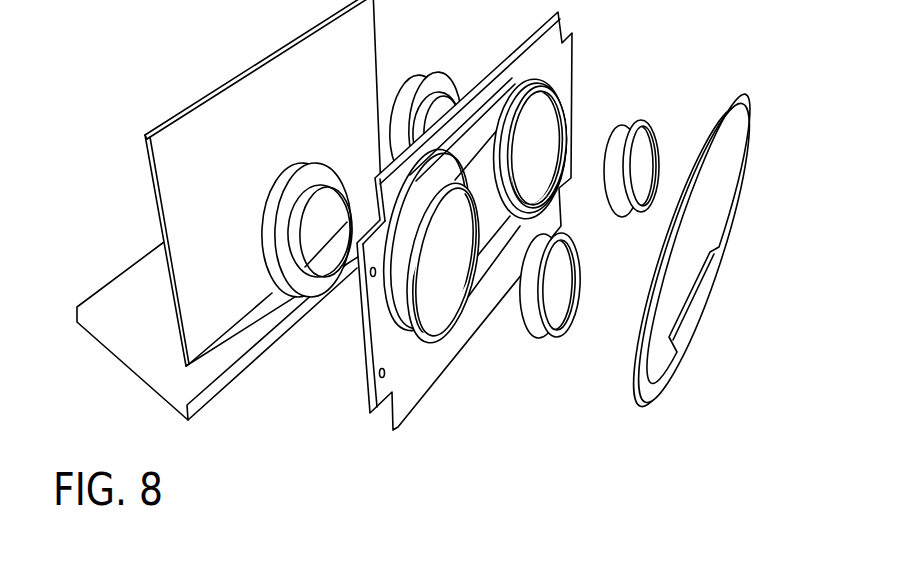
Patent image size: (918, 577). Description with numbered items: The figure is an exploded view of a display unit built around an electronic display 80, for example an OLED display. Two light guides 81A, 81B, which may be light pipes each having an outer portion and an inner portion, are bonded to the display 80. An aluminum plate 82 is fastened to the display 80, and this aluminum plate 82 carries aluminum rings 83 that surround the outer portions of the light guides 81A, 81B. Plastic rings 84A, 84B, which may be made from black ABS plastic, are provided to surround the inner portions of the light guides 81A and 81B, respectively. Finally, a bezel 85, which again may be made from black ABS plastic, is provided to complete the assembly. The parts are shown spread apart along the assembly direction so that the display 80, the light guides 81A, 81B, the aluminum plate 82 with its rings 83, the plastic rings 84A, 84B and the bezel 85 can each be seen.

The display 80 is at (205, 115).
The light guide 81A is at (292, 292).
The light guide 81B is at (432, 83).
The aluminum plate 82 is at (378, 350).
The aluminum rings 83 is at (446, 328).
The plastic ring 84A is at (553, 333).
The plastic ring 84B is at (640, 121).
The bezel 85 is at (722, 263).